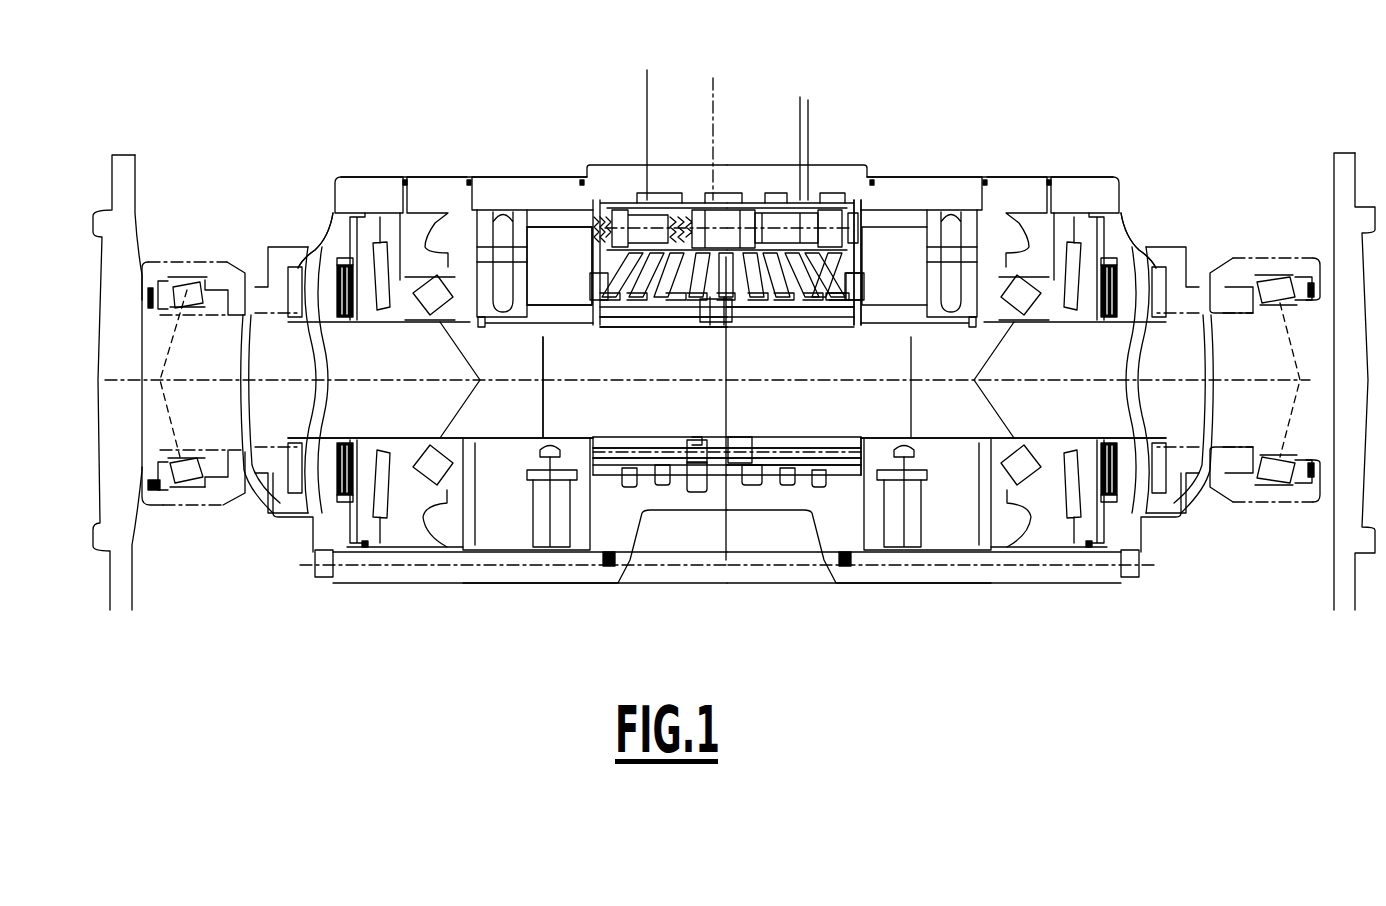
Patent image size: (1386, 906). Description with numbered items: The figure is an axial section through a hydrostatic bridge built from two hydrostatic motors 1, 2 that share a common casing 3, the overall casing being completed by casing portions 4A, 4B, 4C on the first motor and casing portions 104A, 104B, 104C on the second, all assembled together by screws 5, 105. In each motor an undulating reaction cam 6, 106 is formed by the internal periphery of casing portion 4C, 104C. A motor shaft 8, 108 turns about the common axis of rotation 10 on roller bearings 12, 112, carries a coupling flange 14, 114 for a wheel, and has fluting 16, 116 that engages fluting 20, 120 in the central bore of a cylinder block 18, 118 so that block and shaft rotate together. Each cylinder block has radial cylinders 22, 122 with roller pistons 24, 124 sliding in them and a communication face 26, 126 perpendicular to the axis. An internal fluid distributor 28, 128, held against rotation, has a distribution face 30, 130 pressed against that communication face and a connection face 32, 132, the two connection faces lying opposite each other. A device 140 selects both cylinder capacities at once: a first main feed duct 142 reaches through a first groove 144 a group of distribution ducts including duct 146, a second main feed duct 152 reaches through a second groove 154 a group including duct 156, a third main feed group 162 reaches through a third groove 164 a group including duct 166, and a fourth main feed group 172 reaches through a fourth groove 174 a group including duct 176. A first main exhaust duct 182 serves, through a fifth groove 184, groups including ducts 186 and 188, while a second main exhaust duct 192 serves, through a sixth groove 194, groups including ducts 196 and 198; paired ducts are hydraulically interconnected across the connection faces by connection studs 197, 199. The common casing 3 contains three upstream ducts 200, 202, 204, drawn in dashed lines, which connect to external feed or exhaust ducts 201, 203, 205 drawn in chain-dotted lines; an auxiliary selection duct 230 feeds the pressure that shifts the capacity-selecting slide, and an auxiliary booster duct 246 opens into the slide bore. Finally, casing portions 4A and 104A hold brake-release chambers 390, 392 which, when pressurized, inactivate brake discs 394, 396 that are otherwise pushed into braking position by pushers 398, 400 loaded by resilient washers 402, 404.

The hydrostatic motor 1 is at (445, 118).
The hydrostatic motor 2 is at (1051, 120).
The common casing 3 is at (695, 150).
The casing portion 4A is at (358, 205).
The casing portion 4B is at (415, 190).
The casing portion 4C is at (489, 188).
The screws 5 is at (322, 570).
The undulating reaction cam 6 is at (512, 205).
The motor shaft 8 is at (326, 419).
The axis of rotation 10 is at (212, 380).
The roller bearings 12 is at (178, 482).
The coupling flange 14 is at (121, 160).
The fluting 16 is at (487, 440).
The cylinder block 18 is at (470, 230).
The fluting 20 is at (493, 320).
The radial cylinders 22 is at (532, 510).
The roller piston 24 is at (530, 481).
The communication face 26 is at (627, 327).
The internal fluid distributor 28 is at (630, 437).
The distribution face 30 is at (543, 327).
The connection face 32 is at (734, 425).
The casing portion 104A is at (1117, 187).
The casing portion 104B is at (1067, 173).
The casing portion 104C is at (963, 177).
The screws 105 is at (1128, 562).
The undulating reaction cam 106 is at (980, 220).
The motor shaft 108 is at (1098, 419).
The roller bearings 112 is at (1278, 478).
The coupling flange 114 is at (1347, 158).
The fluting 116 is at (1002, 427).
The cylinder block 118 is at (1037, 187).
The fluting 120 is at (997, 320).
The radial cylinders 122 is at (908, 520).
The roller piston 124 is at (920, 487).
The communication face 126 is at (853, 333).
The internal fluid distributor 128 is at (830, 437).
The distribution face 130 is at (860, 303).
The connection face 132 is at (722, 340).
The device for simultaneous selection of cylinder capacities 140 is at (865, 180).
The first main feed duct 142 is at (637, 263).
The first groove 144 is at (630, 488).
The distribution duct 146 is at (623, 330).
The second main feed duct 152 is at (636, 312).
The second groove 154 is at (662, 488).
The distribution duct 156 is at (652, 328).
The third main feed group 162 is at (845, 272).
The third groove 164 is at (821, 490).
The distribution duct 166 is at (830, 335).
The fourth main feed group 172 is at (795, 322).
The fourth groove 174 is at (791, 488).
The distribution duct 176 is at (808, 335).
The first main exhaust duct 182 is at (683, 200).
The fifth groove 184 is at (697, 493).
The distribution duct 186 is at (657, 445).
The distribution duct 188 is at (790, 440).
The second main exhaust duct 192 is at (800, 160).
The sixth groove 194 is at (756, 488).
The distribution duct 196 is at (735, 333).
The connection stud 197 is at (713, 325).
The distribution duct 198 is at (752, 325).
The connection stud 199 is at (750, 440).
The upstream duct 200 is at (640, 170).
The external duct 201 is at (645, 100).
The upstream duct 202 is at (822, 175).
The external duct 203 is at (808, 90).
The upstream duct 204 is at (723, 180).
The external duct 205 is at (720, 90).
The auxiliary selection duct 230 is at (827, 180).
The auxiliary booster duct 246 is at (755, 180).
The brake-release chamber 390 is at (360, 235).
The brake-release chamber 392 is at (1112, 240).
The brake disc 394 is at (295, 270).
The brake disc 396 is at (1120, 273).
The pusher 398 is at (356, 260).
The pusher 400 is at (1107, 260).
The resilient washer 402 is at (385, 310).
The resilient washer 404 is at (1080, 308).